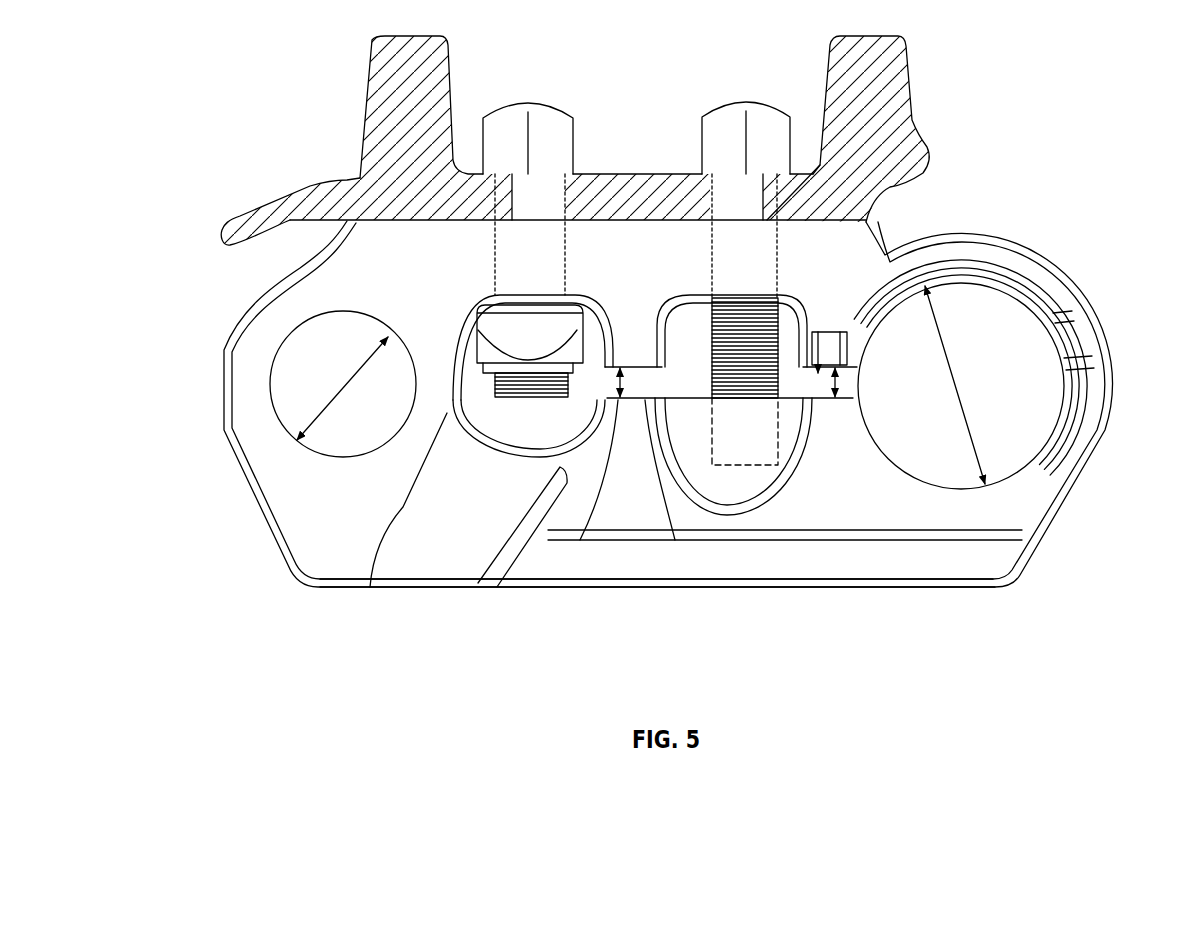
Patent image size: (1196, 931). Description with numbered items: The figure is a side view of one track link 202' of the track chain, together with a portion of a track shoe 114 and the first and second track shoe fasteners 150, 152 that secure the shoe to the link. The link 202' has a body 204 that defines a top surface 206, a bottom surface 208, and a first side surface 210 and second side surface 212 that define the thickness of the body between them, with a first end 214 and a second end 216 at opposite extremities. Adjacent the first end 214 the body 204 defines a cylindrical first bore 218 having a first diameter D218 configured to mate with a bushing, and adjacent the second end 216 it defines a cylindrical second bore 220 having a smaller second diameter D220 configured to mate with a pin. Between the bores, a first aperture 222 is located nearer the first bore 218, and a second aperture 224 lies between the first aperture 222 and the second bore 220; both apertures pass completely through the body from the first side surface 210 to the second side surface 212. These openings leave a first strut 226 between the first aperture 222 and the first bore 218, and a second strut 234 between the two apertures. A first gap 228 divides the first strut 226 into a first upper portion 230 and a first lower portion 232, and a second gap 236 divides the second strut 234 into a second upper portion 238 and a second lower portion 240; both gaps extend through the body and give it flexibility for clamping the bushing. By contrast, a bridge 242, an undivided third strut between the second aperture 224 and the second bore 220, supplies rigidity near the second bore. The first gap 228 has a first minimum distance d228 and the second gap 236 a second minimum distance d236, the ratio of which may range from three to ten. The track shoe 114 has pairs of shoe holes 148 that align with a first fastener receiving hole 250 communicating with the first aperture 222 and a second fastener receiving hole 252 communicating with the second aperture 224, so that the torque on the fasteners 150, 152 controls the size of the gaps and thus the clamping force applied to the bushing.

The track shoe 114 is at (278, 165).
The shoe holes 148 is at (713, 220).
The first track shoe fastener 150 is at (745, 106).
The second track shoe fastener 152 is at (533, 108).
The link 202' is at (663, 404).
The body 204 is at (1024, 525).
The top surface 206 is at (868, 211).
The bottom surface 208 is at (882, 596).
The first side surface 210 is at (941, 570).
The second side surface 212 is at (1057, 473).
The first end 214 is at (1112, 408).
The second end 216 is at (215, 398).
The first bore 218 is at (1042, 338).
The second bore 220 is at (320, 324).
The first aperture 222 is at (627, 470).
The second aperture 224 is at (525, 447).
The first strut 226 is at (826, 448).
The first gap 228 is at (820, 360).
The first upper portion 230 is at (855, 303).
The first lower portion 232 is at (775, 470).
The second strut 234 is at (675, 540).
The second gap 236 is at (638, 370).
The second upper portion 238 is at (630, 323).
The second lower portion 240 is at (580, 540).
The bridge 242 is at (370, 587).
The first fastener receiving hole 250 is at (700, 260).
The second fastener receiving hole 252 is at (485, 262).
The first minimum distance d228 is at (836, 392).
The second minimum distance d236 is at (617, 384).
The first diameter D218 is at (957, 397).
The second diameter D220 is at (327, 407).